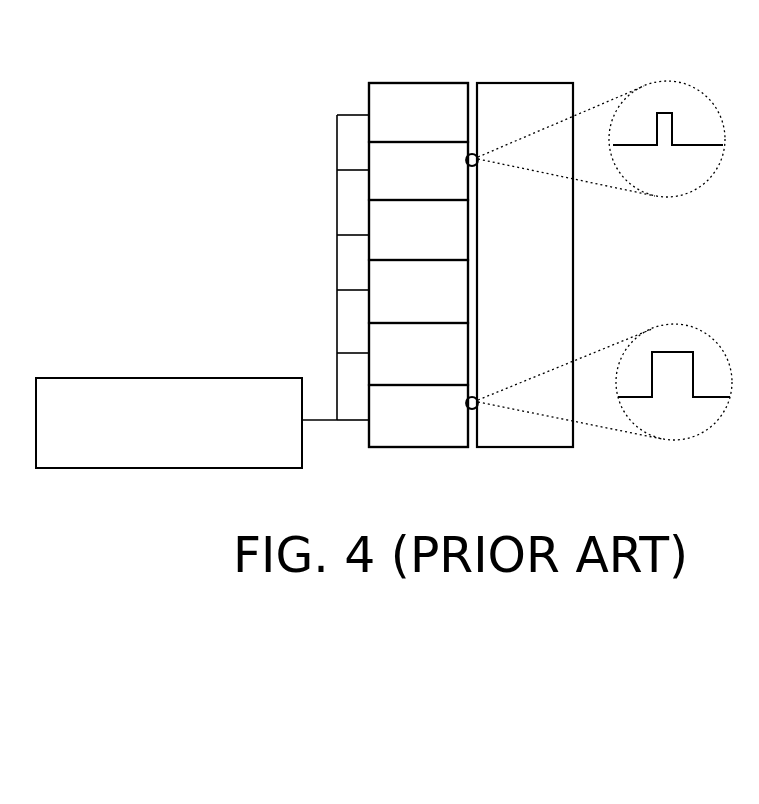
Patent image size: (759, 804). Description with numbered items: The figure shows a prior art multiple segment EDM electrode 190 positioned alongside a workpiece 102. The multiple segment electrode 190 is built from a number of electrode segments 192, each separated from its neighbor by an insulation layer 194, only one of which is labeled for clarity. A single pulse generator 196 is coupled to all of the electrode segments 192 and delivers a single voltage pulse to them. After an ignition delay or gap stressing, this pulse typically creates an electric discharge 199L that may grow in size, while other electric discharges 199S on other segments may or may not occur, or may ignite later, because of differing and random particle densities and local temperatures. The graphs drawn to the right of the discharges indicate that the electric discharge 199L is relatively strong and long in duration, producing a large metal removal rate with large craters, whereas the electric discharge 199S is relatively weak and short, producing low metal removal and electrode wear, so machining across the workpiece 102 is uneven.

The multiple segment electrode 190 is at (352, 84).
The insulation layer 194 is at (390, 138).
The electrode segment 192 is at (443, 126).
The workpiece 102 is at (538, 262).
The pulse generator 196 is at (287, 434).
The electric discharge 199S is at (474, 155).
The electric discharge 199L is at (478, 406).